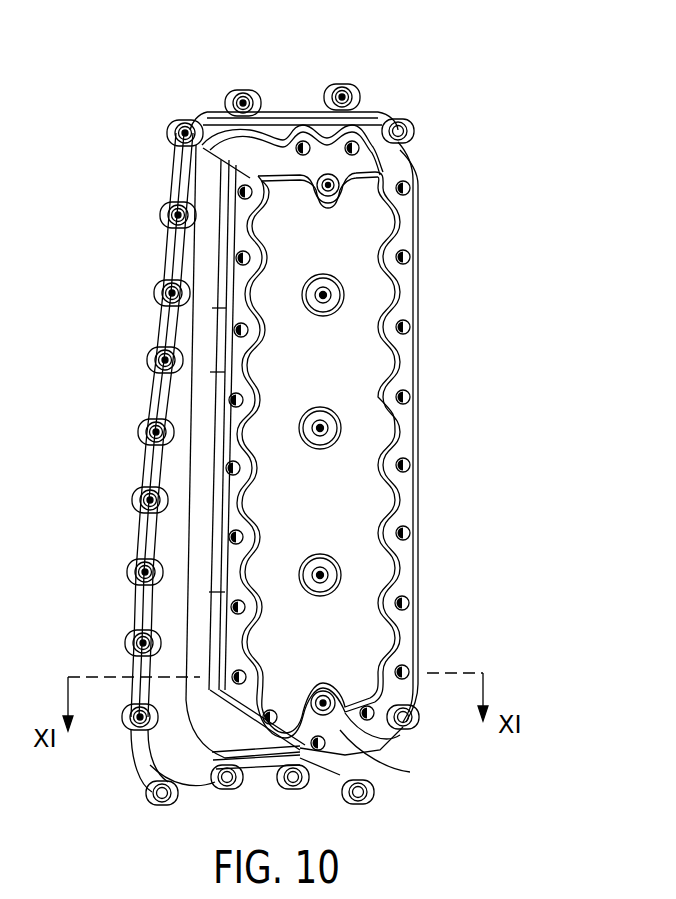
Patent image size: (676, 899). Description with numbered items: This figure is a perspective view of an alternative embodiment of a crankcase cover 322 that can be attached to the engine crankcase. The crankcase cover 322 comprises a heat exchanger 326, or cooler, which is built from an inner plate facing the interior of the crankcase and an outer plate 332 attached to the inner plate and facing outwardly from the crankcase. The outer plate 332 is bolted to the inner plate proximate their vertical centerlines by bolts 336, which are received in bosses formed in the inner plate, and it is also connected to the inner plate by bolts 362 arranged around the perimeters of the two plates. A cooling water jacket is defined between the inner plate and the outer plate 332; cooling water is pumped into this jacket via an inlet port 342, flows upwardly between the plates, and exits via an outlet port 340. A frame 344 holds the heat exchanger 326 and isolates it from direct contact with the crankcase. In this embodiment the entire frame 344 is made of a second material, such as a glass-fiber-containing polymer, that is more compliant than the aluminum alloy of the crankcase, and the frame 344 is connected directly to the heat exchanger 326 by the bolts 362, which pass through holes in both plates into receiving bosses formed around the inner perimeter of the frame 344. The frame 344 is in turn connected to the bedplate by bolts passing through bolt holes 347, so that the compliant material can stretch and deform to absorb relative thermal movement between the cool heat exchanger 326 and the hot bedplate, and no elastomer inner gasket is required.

The crankcase cover 322 is at (505, 62).
The heat exchanger 326 is at (345, 357).
The outer plate 332 is at (358, 491).
The bolts 336 is at (340, 296).
The outlet port 340 is at (398, 214).
The inlet port 342 is at (320, 692).
The frame 344 is at (166, 607).
The bolt holes 347 is at (348, 92).
The bolts 362 is at (242, 256).